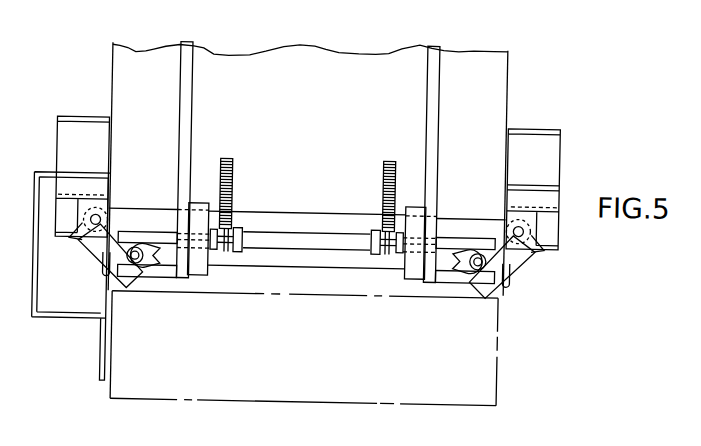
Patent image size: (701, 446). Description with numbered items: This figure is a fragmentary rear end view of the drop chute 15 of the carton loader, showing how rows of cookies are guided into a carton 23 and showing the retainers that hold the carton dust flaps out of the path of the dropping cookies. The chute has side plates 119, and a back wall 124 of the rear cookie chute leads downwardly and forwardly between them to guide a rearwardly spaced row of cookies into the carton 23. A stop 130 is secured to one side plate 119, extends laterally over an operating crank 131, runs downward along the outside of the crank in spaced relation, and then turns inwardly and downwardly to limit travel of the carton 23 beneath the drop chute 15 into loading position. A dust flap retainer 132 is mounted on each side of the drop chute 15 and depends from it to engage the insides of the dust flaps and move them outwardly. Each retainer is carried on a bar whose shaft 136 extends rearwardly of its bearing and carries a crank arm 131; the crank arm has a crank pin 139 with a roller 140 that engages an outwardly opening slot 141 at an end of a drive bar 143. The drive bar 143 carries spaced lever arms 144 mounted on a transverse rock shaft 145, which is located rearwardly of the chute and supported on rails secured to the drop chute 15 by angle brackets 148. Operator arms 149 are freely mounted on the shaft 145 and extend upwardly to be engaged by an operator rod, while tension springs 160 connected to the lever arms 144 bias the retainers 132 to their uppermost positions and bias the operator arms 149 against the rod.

The back wall 124 is at (336, 67).
The side plate 119 is at (110, 102).
The drop chute 15 is at (478, 97).
The carton 23 is at (502, 347).
The stop 130 is at (100, 366).
The angle bracket 148 is at (55, 157).
The shaft 136 is at (99, 219).
The dust flap retainer 132 is at (111, 285).
The crank arm 131 is at (98, 258).
The roller 140 is at (147, 237).
The operator arm 149 is at (189, 108).
The lever arm 144 is at (196, 205).
The drive bar 143 is at (308, 268).
The rock shaft 145 is at (296, 223).
The tension spring 160 is at (231, 184).
The slot 141 is at (157, 264).
The crank pin 139 is at (137, 266).